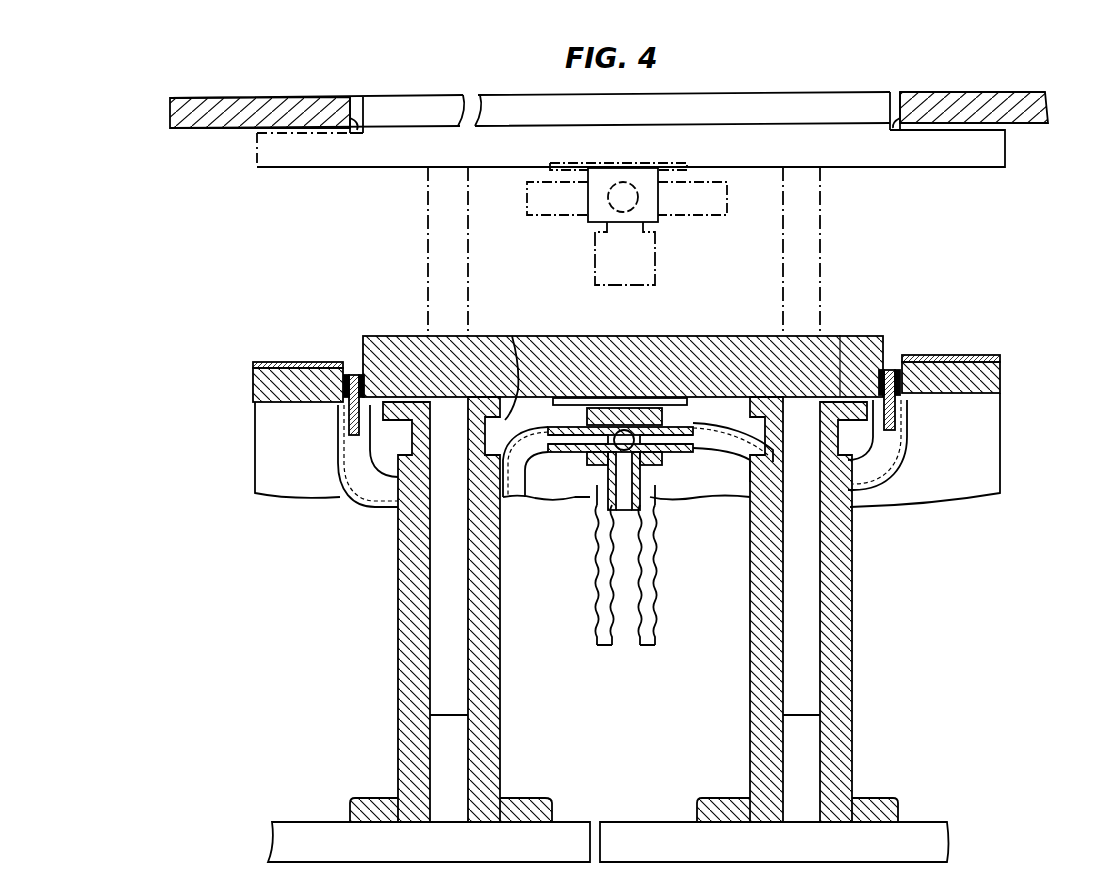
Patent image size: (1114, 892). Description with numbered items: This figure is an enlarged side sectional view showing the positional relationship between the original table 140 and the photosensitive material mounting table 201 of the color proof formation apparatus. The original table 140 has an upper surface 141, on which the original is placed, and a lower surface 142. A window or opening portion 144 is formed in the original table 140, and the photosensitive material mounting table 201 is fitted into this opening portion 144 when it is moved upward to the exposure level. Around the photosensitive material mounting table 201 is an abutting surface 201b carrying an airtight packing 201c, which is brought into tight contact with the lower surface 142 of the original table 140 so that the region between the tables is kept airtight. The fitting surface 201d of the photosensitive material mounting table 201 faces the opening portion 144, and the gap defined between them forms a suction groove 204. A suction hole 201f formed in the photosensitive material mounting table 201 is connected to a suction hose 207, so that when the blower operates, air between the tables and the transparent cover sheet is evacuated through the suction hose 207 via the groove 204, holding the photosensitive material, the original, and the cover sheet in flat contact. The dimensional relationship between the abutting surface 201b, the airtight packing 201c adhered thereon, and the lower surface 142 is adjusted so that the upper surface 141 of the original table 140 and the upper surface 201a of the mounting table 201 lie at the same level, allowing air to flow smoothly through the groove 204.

The original table 140 is at (203, 88).
The upper surface 141 is at (304, 96).
The lower surface 142 is at (215, 130).
The suction groove 204 is at (360, 98).
The window (opening portion) 144 is at (356, 130).
The photosensitive material mounting table 201 is at (700, 350).
The upper surface 201a is at (512, 336).
The abutting surface 201b is at (268, 362).
The airtight packing 201c is at (310, 362).
The fitting surface 201d is at (352, 370).
The suction hole 201f is at (907, 423).
The suction hose 207 is at (657, 632).